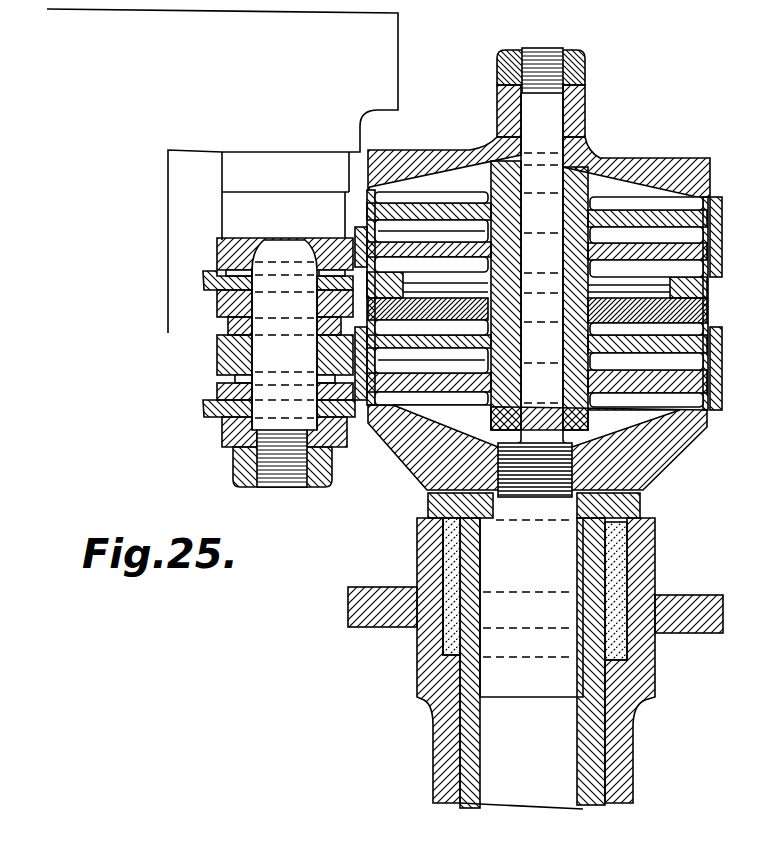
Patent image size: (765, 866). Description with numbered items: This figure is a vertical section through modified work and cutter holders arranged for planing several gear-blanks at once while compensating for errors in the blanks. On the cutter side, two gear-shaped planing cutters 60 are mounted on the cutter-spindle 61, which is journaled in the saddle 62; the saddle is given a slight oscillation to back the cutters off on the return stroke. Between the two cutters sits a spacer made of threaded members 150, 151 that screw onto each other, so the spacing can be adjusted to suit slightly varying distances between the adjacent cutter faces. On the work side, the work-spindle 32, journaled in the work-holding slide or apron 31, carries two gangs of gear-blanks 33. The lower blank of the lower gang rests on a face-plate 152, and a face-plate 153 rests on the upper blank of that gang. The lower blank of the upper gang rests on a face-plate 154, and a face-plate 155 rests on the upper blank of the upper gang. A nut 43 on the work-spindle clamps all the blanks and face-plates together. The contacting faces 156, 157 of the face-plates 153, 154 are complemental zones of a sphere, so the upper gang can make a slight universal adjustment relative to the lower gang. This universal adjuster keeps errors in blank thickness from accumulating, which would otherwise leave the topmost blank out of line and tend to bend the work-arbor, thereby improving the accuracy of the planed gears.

The work-holding slide or apron 31 is at (351, 627).
The work-spindle 32 is at (553, 567).
The gear-blanks 33 is at (363, 347).
The nut 43 is at (583, 73).
The gear-shaped planing cutter 60 is at (203, 279).
The cutter-spindle 61 is at (237, 156).
The saddle 62 is at (380, 60).
The threaded spacer member 150 is at (217, 312).
The threaded spacer member 151 is at (217, 350).
The face-plate 152 is at (663, 452).
The face-plate 153 is at (437, 313).
The face-plate 154 is at (425, 273).
The face-plate 155 is at (675, 158).
The contacting face 156 is at (706, 310).
The contacting face 157 is at (705, 287).